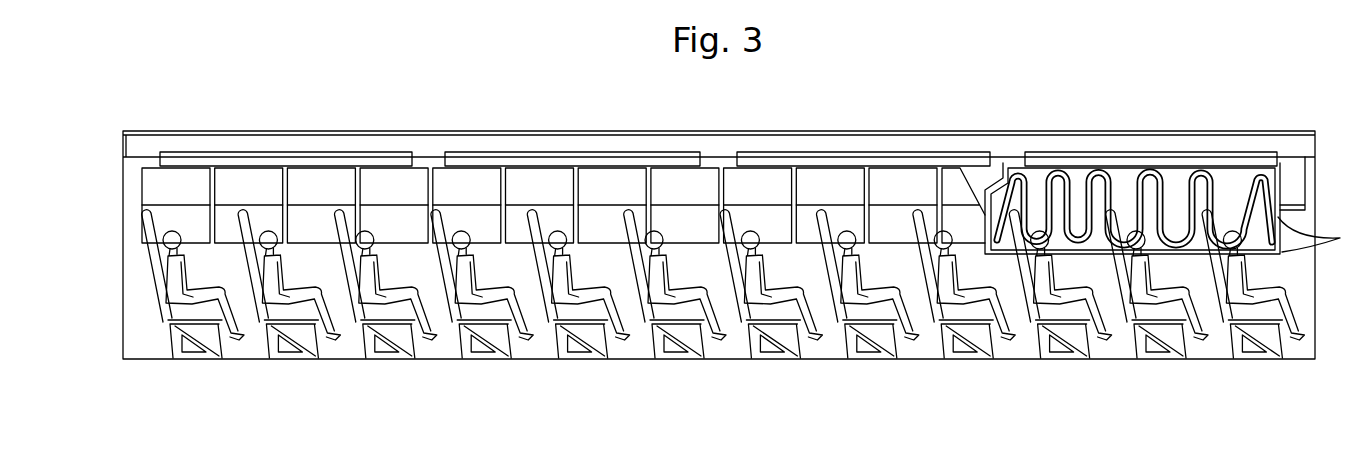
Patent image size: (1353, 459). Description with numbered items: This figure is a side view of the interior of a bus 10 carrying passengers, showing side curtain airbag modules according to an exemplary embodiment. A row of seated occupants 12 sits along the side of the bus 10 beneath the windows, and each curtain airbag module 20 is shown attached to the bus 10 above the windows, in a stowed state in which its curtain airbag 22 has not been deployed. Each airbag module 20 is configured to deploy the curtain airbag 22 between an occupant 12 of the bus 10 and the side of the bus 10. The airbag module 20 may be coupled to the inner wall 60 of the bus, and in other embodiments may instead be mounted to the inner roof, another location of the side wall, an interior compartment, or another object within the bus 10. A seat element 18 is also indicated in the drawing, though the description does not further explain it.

The bus 10 is at (884, 105).
The occupant 12 is at (1251, 305).
The seat back 18 is at (1230, 320).
The curtain airbag module 20 is at (250, 152).
The curtain airbag 22 is at (1233, 173).
The inner wall 60 is at (1132, 170).